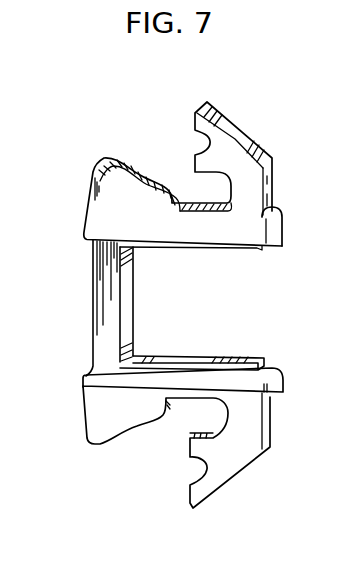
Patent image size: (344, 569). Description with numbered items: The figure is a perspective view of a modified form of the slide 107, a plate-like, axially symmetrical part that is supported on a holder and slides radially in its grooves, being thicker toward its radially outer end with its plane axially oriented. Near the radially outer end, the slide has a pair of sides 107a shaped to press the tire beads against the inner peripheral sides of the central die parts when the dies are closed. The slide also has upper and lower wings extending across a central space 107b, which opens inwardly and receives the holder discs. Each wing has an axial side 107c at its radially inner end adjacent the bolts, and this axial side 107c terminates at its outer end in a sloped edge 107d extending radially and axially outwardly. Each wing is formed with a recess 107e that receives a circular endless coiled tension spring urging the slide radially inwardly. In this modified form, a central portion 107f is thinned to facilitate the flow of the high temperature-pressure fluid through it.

The slide 107 is at (76, 225).
The sides 107a is at (137, 173).
The central space 107b is at (202, 320).
The axial side 107c is at (268, 172).
The sloped edge 107d is at (228, 128).
The recess 107e is at (230, 205).
The central portion 107f is at (107, 312).